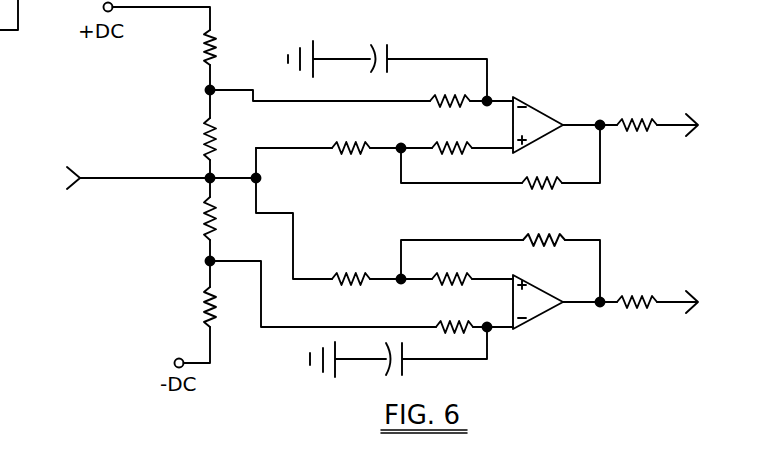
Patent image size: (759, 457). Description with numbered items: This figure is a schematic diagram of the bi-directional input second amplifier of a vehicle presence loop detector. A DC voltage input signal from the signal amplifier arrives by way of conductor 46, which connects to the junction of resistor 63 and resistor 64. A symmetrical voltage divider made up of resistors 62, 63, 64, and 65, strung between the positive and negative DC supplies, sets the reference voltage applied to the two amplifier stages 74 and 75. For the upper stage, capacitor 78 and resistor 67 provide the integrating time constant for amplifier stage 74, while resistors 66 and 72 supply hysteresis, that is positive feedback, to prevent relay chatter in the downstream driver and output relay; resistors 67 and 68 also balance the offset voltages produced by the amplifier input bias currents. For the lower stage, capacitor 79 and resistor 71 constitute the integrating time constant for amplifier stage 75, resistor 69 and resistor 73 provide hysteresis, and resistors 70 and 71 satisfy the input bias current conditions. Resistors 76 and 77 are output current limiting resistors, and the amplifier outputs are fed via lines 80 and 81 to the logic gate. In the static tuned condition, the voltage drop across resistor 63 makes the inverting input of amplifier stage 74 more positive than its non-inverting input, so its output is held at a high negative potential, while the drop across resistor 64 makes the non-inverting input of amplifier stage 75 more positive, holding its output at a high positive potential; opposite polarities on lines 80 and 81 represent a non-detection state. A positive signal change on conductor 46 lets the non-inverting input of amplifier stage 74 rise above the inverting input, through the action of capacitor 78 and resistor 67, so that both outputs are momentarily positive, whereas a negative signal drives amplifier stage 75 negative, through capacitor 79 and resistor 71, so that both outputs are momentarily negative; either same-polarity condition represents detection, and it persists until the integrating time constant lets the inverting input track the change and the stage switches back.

The conductor 46 is at (161, 189).
The resistor 62 is at (191, 47).
The resistor 63 is at (190, 139).
The resistor 64 is at (190, 218).
The resistor 65 is at (191, 307).
The resistor 66 is at (351, 135).
The resistor 67 is at (450, 88).
The resistor 68 is at (452, 135).
The resistor 69 is at (351, 267).
The resistor 70 is at (455, 267).
The resistor 71 is at (454, 315).
The resistor 72 is at (542, 173).
The resistor 73 is at (544, 226).
The amplifier stage 74 is at (538, 116).
The amplifier stage 75 is at (541, 309).
The resistor 76 is at (637, 110).
The resistor 77 is at (637, 289).
The capacitor 78 is at (387, 58).
The capacitor 79 is at (398, 355).
The line 80 is at (679, 108).
The line 81 is at (679, 286).